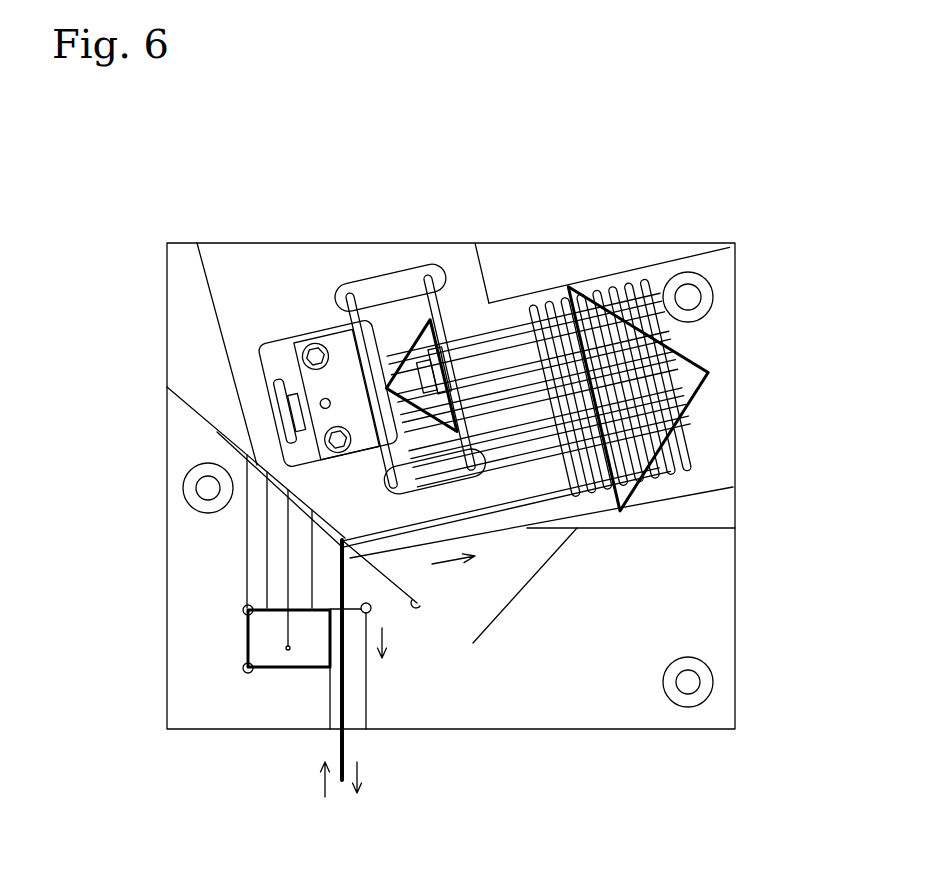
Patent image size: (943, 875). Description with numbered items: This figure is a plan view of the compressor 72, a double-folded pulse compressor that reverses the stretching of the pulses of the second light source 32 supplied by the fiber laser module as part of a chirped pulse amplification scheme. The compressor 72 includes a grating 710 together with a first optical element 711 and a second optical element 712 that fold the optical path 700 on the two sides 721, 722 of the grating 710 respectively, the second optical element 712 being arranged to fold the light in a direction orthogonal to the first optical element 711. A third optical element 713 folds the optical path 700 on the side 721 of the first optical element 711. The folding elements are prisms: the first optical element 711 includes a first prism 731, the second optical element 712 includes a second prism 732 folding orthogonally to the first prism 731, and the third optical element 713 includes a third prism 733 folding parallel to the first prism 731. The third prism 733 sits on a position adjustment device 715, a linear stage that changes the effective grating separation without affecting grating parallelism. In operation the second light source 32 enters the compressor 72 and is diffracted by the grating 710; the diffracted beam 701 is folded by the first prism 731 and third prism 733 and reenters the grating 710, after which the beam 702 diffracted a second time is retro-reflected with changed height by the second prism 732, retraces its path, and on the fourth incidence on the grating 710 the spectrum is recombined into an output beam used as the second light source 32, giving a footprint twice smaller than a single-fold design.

The compressor 72 is at (512, 222).
The optical path 700 is at (473, 500).
The beam 701 is at (523, 525).
The position adjustment device 715 is at (317, 325).
The third prism 733 is at (348, 296).
The third optical element 713 is at (404, 345).
The first prism 731 is at (665, 431).
The first optical element 711 is at (652, 473).
The grating 710 is at (407, 597).
The beam 702 is at (267, 560).
The second prism 732 is at (243, 632).
The second optical element 712 is at (243, 647).
The side 721 is at (450, 565).
The side 722 is at (393, 637).
The second light source 32 is at (323, 788).